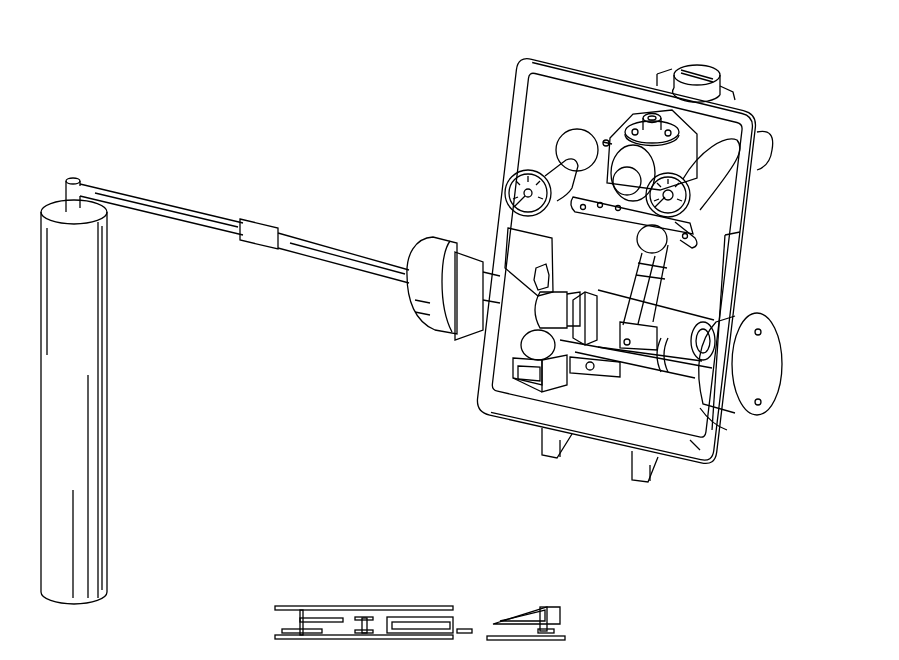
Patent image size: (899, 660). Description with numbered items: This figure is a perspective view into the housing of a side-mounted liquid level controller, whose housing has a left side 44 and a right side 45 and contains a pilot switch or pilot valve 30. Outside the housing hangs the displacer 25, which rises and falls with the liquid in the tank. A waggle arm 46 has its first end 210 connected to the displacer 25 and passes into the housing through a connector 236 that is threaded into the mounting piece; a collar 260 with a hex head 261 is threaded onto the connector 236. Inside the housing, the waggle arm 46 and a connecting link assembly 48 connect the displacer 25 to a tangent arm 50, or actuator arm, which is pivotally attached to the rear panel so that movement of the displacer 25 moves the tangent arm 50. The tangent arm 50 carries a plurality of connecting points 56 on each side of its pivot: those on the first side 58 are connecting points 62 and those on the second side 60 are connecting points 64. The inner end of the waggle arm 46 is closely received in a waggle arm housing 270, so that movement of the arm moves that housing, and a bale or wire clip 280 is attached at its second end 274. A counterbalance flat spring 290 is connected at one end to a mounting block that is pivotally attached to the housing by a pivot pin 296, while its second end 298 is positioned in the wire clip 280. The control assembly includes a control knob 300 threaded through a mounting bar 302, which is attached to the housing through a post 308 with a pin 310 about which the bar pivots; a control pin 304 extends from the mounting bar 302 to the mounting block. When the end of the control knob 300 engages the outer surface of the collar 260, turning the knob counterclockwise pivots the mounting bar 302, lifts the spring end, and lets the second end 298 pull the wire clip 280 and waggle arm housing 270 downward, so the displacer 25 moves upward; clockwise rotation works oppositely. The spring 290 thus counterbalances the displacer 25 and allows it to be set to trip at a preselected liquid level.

The displacer 25 is at (108, 510).
The first end 210 is at (80, 178).
The waggle arm 46 is at (178, 203).
The left side 44 is at (502, 172).
The right side 45 is at (758, 168).
The pilot switch or pilot valve 30 is at (433, 252).
The connector 236 is at (503, 262).
The collar 260 is at (535, 297).
The hex head 261 is at (582, 294).
The first side 58 is at (512, 167).
The connecting points 56 is at (567, 132).
The connecting points 62 is at (598, 198).
The second side 60 is at (690, 222).
The tangent arm 50 is at (583, 212).
The connecting points 64 is at (668, 240).
The connecting link assembly 48 is at (705, 283).
The waggle arm housing 270 is at (712, 312).
The second end 274 is at (712, 338).
The second end 298 is at (716, 368).
The bale or wire clip 280 is at (722, 428).
The control knob 300 is at (522, 337).
The post 308 is at (540, 362).
The mounting bar 302 is at (560, 380).
The pin 310 is at (543, 400).
The counterbalance flat spring 290 is at (682, 462).
The control pin 304 is at (578, 392).
The pivot pin 296 is at (603, 450).